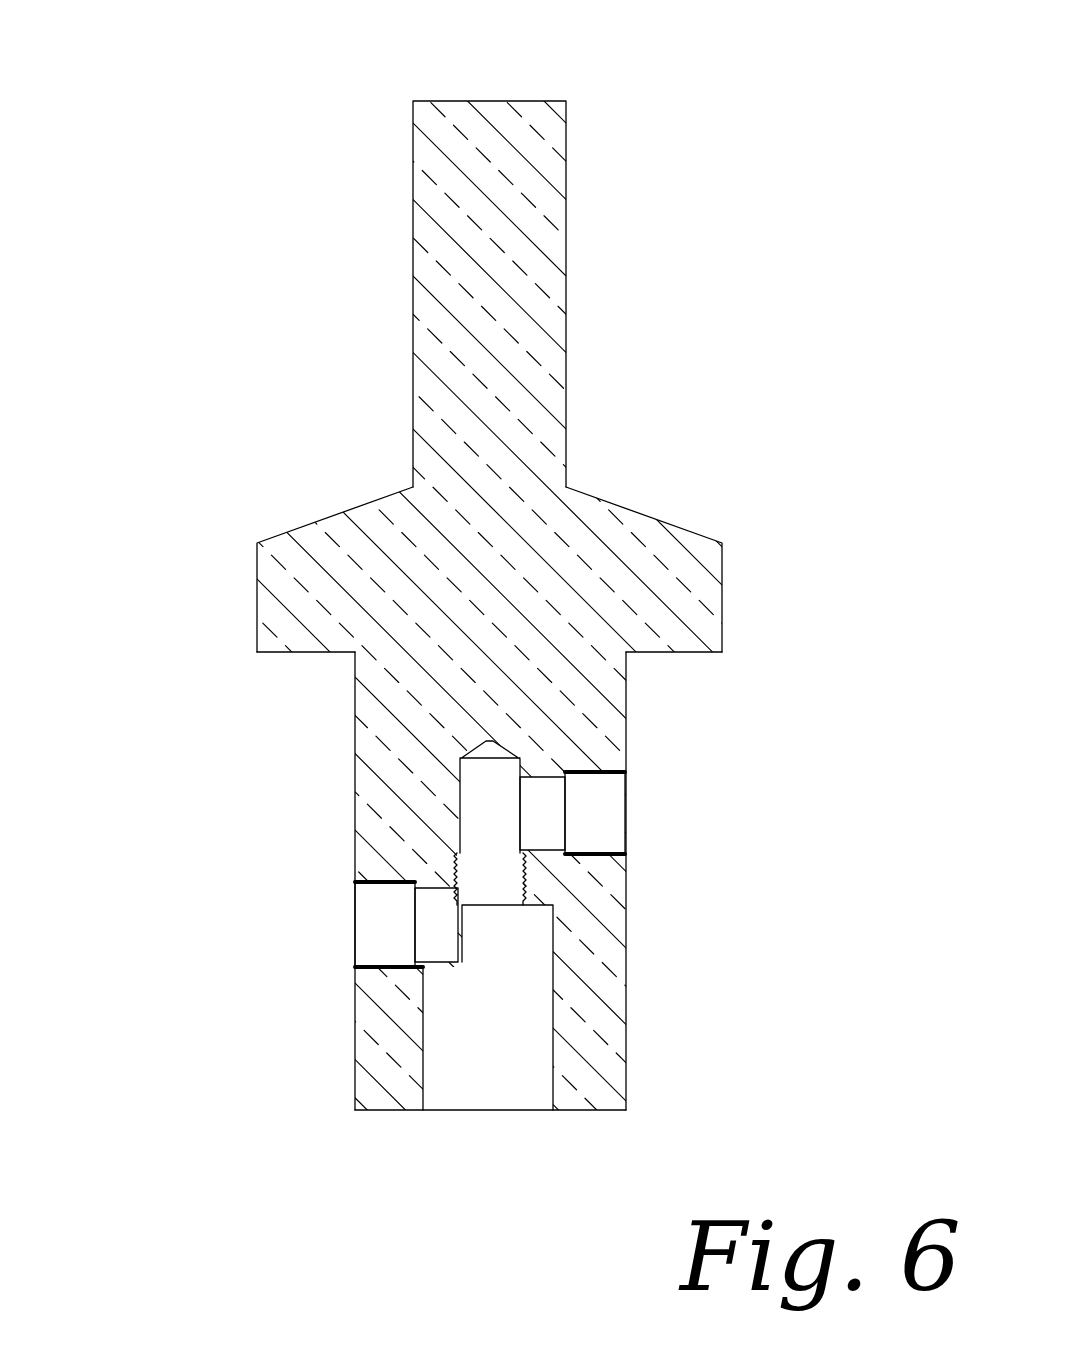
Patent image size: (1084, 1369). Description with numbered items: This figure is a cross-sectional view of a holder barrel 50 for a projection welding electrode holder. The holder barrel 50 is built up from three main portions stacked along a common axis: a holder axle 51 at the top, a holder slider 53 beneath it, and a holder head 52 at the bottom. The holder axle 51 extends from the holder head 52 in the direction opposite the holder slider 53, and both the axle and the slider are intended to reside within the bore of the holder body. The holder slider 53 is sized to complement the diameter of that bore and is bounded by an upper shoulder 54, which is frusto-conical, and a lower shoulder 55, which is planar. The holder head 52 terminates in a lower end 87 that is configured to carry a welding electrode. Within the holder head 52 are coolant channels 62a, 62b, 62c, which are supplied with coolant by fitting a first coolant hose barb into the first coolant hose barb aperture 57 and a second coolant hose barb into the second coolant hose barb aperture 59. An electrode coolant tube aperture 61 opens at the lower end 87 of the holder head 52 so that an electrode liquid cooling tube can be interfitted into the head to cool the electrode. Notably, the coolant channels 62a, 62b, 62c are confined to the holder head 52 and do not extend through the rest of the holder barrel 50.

The holder barrel 50 is at (130, 60).
The holder axle 51 is at (482, 333).
The holder head 52 is at (592, 1008).
The holder slider 53 is at (662, 543).
The upper shoulder 54 is at (352, 508).
The lower shoulder 55 is at (290, 653).
The first coolant hose barb aperture 57 is at (598, 828).
The second coolant hose barb aperture 59 is at (380, 927).
The electrode coolant tube aperture 61 is at (500, 1112).
The coolant channel 62a is at (547, 808).
The coolant channel 62b is at (623, 862).
The coolant channel 62c is at (447, 905).
The lower end 87 is at (380, 1110).